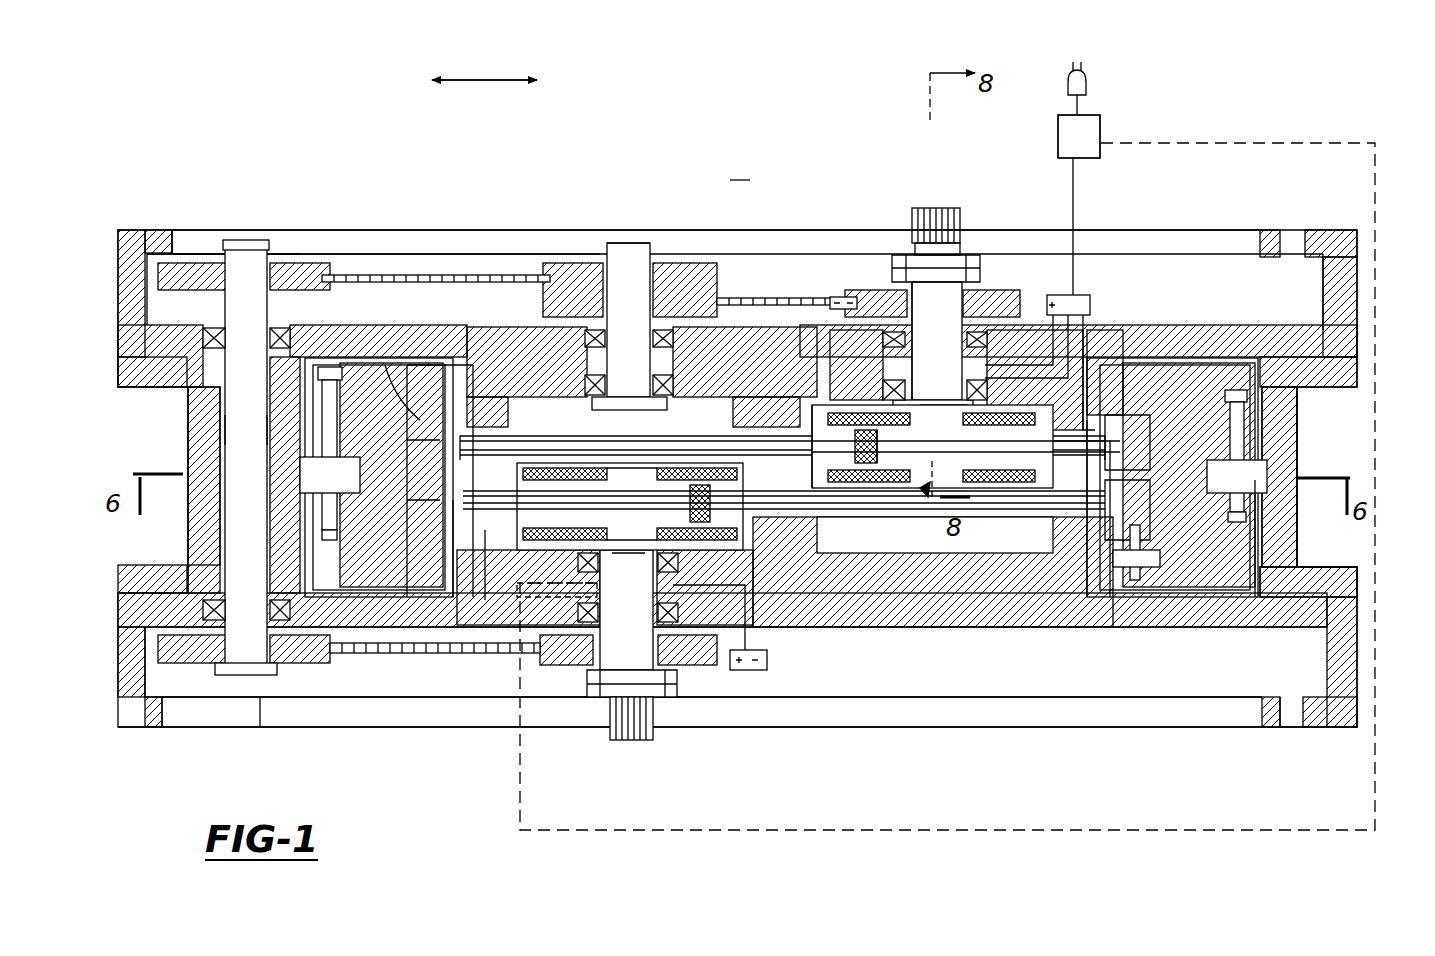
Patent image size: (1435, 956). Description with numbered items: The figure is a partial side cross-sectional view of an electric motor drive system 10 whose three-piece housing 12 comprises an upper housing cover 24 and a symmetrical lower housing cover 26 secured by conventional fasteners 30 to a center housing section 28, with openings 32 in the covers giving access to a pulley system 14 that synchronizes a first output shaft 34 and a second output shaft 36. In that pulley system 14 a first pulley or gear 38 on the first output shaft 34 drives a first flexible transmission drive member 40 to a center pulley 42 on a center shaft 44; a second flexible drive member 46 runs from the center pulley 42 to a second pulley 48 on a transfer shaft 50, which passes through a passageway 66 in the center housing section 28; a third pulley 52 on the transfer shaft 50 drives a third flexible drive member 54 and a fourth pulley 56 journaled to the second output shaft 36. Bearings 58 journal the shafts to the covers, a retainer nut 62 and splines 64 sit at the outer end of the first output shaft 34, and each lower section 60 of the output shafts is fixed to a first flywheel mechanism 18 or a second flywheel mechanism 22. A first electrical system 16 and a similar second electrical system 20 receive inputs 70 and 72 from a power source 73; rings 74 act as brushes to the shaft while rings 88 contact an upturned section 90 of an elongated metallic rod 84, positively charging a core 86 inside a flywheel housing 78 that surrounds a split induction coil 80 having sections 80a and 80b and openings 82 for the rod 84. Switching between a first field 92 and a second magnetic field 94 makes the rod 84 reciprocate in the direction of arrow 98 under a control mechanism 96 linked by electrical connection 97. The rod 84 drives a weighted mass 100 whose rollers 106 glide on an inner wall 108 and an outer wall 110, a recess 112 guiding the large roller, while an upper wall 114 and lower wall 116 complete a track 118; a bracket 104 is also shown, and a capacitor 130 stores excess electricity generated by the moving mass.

The apparatus 10 is at (742, 173).
The housing 12 is at (146, 228).
The pulley system 14 is at (463, 237).
The first electrical system 16 is at (1090, 285).
The first flywheel mechanism 18 is at (912, 500).
The second electrical system 20 is at (466, 642).
The second flywheel mechanism 22 is at (560, 330).
The upper housing cover 24 is at (535, 230).
The lower housing cover 26 is at (493, 727).
The center housing section 28 is at (183, 463).
The fasteners 30 is at (158, 398).
The openings 32 is at (172, 243).
The first output shaft 34 is at (960, 210).
The second output shaft 36 is at (615, 738).
The first pulley or gear 38 is at (1010, 295).
The first flexible transmission drive member 40 is at (800, 298).
The center pulley or gear 42 is at (690, 263).
The center shaft 44 is at (637, 243).
The second flexible drive member 46 is at (363, 270).
The second pulley or gear 48 is at (298, 263).
The transfer shaft 50 is at (262, 349).
The third pulley or gear 52 is at (200, 663).
The third flexible drive member 54 is at (428, 655).
The fourth pulley or gear 56 is at (700, 665).
The bearings 58 is at (280, 322).
The lower section of output shaft 60 is at (950, 395).
The retainer nut 62 is at (975, 270).
The splines 64 is at (930, 208).
The passageway 66 is at (223, 427).
The first input 70 is at (1100, 300).
The second input 72 is at (1100, 318).
The power source 73 is at (1085, 80).
The rings 74 is at (905, 398).
The flywheel housing 78 is at (850, 490).
The induction coil 80 is at (540, 527).
The first section of induction coil 80a is at (880, 463).
The second section of induction coil 80b is at (1007, 460).
The openings 82 is at (820, 462).
The elongated metallic rod 84 is at (730, 440).
The core 86 is at (690, 495).
The rings 88 is at (1100, 407).
The upturned section 90 is at (1137, 417).
The first field 92 is at (888, 490).
The second magnetic field 94 is at (700, 468).
The control mechanism 96 is at (1100, 140).
The electrical connection 97 is at (848, 830).
The arrow 98 is at (470, 80).
The weighted mass 100 is at (1253, 573).
The bracket 104 is at (395, 372).
The rollers 106 is at (460, 400).
The inner wall 108 is at (1120, 583).
The outer wall 110 is at (1247, 597).
The recess 112 is at (1280, 480).
The upper wall 114 is at (400, 365).
The lower wall 116 is at (390, 585).
The track 118 is at (1258, 405).
The capacitor 130 is at (767, 660).